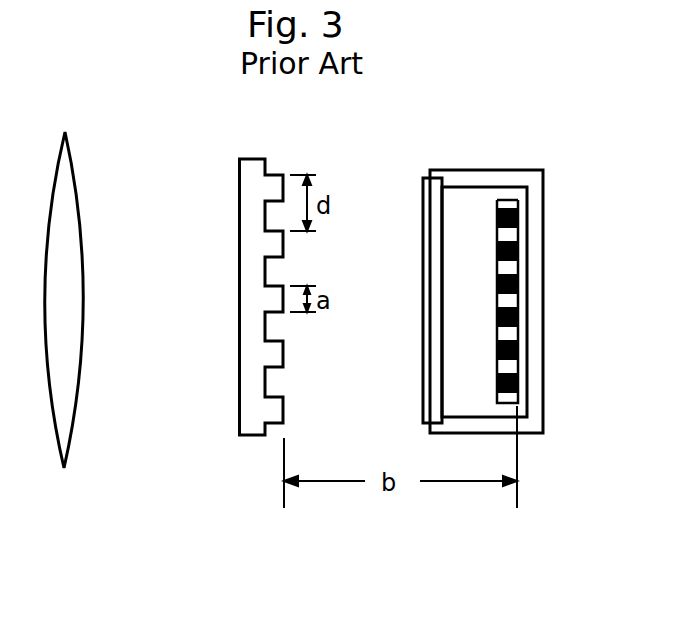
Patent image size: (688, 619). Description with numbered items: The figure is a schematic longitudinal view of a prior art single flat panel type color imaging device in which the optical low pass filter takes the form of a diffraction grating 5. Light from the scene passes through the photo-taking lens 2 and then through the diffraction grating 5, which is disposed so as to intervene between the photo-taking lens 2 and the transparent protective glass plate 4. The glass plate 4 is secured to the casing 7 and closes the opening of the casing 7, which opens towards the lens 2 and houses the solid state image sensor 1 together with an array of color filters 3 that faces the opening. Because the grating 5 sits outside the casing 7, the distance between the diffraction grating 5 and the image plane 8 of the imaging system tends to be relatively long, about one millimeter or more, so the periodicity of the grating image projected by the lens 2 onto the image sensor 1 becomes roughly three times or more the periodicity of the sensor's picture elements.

The solid state image sensor 1 is at (522, 214).
The photo-taking lens 2 is at (67, 156).
The array of color filters 3 is at (498, 204).
The transparent protective glass plate 4 is at (423, 210).
The diffraction grating 5 is at (255, 167).
The casing 7 is at (543, 250).
The image plane 8 is at (505, 198).